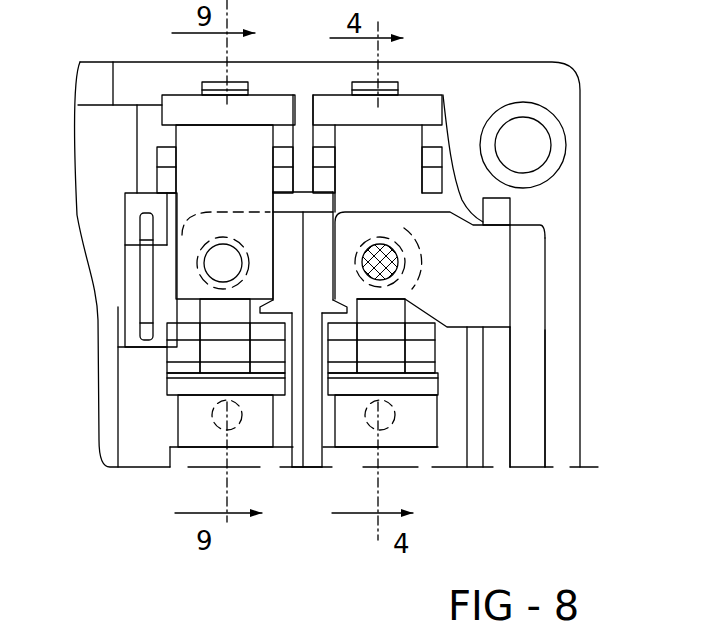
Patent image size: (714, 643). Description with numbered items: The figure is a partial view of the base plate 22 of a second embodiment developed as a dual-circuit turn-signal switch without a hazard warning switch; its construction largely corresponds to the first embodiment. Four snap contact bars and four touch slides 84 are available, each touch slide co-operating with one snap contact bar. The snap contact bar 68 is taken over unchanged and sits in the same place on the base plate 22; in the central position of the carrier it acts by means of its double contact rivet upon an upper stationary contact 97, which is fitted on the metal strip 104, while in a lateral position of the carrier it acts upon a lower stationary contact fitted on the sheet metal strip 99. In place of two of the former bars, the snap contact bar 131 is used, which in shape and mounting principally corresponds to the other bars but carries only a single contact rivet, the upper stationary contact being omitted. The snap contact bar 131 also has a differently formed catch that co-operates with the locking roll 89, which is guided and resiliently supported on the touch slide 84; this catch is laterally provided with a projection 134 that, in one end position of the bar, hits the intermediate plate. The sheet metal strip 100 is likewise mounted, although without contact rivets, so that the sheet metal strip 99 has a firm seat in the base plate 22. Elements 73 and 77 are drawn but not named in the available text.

The base plate 22 is at (570, 432).
The snap contact bar 68 is at (403, 150).
The right clamp block 73 is at (412, 108).
The left clamp block 77 is at (260, 103).
The snap contact bar 131 is at (203, 137).
The projection 134 is at (213, 322).
The upper stationary contact 97 is at (400, 255).
The locking roll 89 is at (213, 355).
The touch slide 84 is at (188, 430).
The metal strip 104 is at (537, 378).
The sheet metal strip 100 is at (300, 431).
The sheet metal strip 99 is at (310, 431).